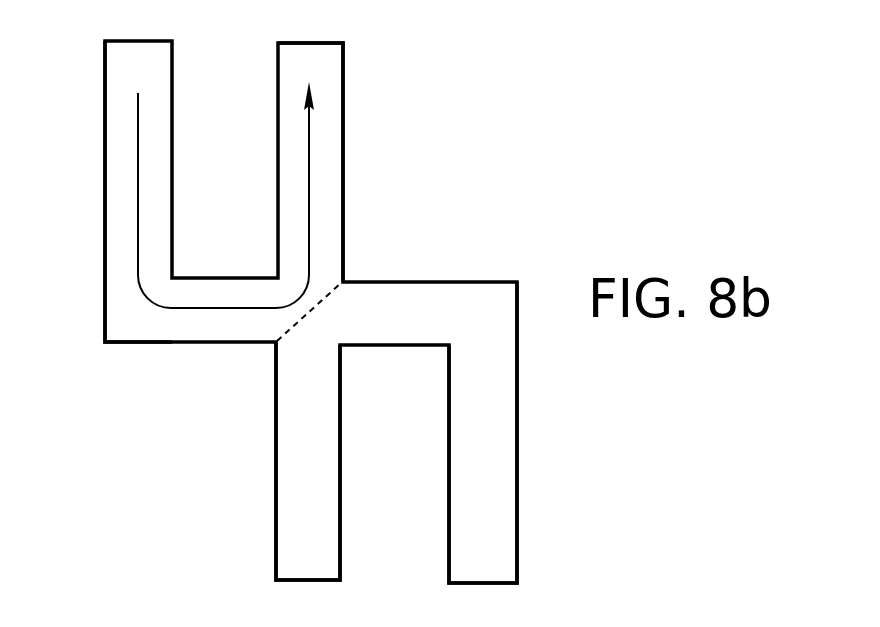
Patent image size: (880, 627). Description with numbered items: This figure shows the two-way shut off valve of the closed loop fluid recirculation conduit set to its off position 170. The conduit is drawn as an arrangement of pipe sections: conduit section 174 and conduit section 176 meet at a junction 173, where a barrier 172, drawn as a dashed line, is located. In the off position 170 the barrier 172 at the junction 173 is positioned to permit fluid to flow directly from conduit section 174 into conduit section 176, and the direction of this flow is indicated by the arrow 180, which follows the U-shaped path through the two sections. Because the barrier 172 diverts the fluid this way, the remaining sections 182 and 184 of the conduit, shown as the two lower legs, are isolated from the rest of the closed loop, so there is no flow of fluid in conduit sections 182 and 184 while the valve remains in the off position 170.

The off position 170 is at (245, 392).
The barrier 172 is at (317, 303).
The junction 173 is at (348, 275).
The conduit section 174 is at (200, 342).
The conduit section 176 is at (343, 193).
The arrow 180 is at (309, 145).
The conduit section 182 is at (275, 518).
The conduit section 184 is at (516, 487).